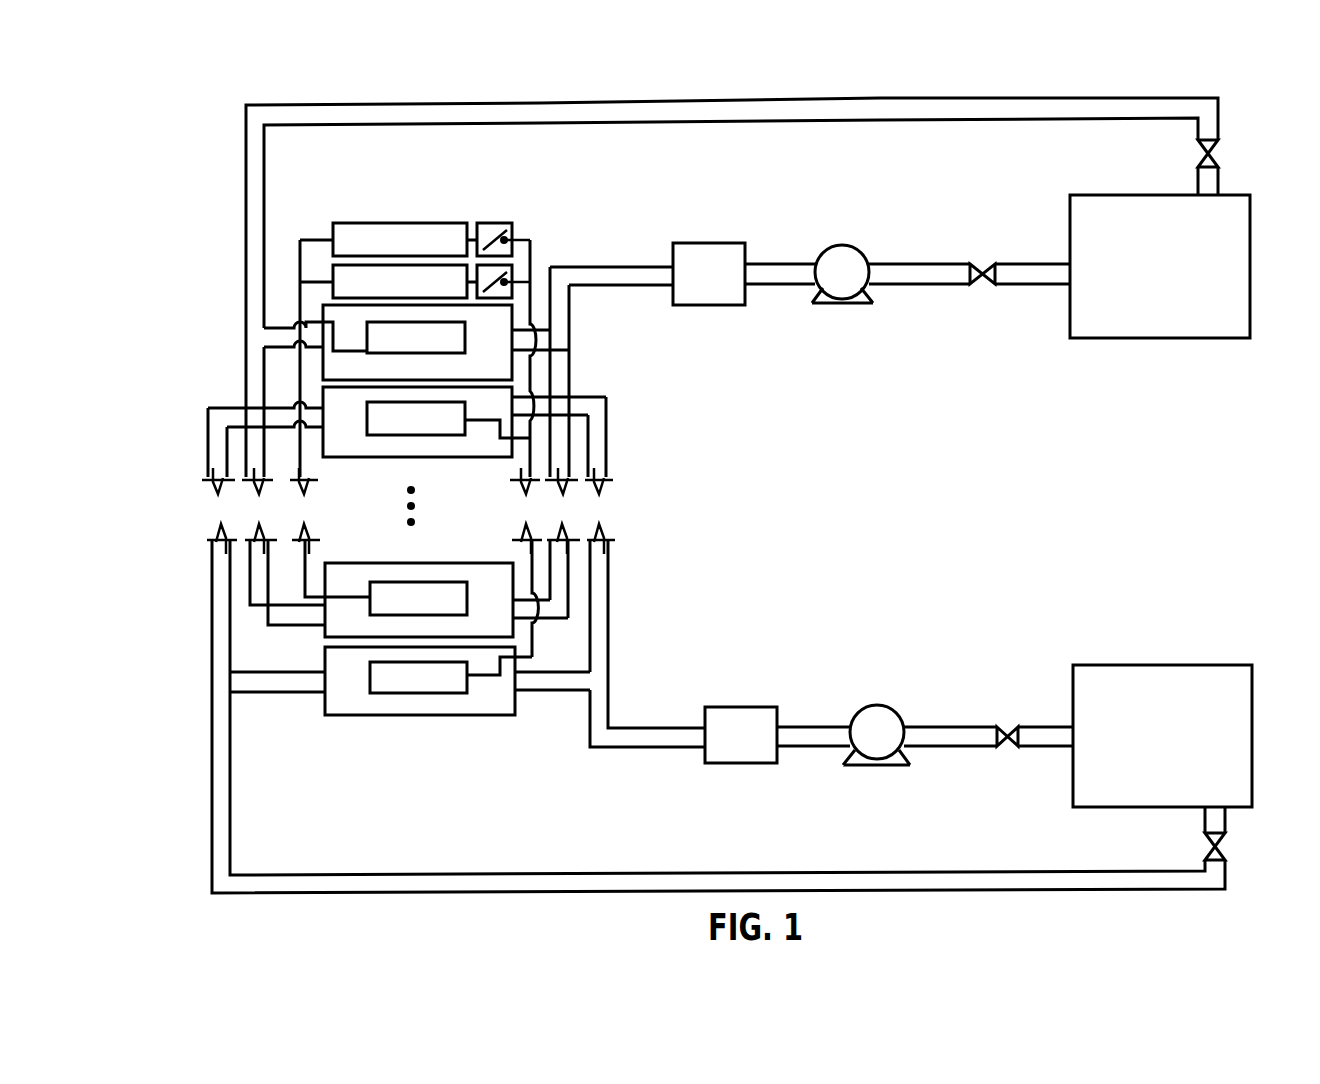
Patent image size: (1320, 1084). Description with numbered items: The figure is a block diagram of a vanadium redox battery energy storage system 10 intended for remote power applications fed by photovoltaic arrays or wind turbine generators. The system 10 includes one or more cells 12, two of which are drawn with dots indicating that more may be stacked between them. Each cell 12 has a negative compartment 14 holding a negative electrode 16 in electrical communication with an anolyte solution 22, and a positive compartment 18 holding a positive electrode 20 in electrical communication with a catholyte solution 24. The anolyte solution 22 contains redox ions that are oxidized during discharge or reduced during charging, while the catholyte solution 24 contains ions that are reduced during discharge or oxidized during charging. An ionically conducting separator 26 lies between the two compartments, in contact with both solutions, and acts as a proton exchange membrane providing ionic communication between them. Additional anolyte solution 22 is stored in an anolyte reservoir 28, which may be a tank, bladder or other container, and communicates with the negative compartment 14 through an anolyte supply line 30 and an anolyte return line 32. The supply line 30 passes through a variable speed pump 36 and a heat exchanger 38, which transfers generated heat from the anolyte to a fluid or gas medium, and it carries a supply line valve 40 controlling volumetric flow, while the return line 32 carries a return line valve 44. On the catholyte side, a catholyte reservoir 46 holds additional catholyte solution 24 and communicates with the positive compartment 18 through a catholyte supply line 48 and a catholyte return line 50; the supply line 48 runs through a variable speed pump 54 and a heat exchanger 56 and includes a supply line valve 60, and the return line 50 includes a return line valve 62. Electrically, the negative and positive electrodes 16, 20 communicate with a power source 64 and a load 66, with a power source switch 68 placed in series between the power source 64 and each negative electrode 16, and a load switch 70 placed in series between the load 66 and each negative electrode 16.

The vanadium redox battery energy storage system 10 is at (197, 132).
The cell 12 is at (464, 539).
The negative compartment 14 is at (474, 414).
The negative electrode 16 is at (403, 432).
The positive compartment 18 is at (479, 349).
The positive electrode 20 is at (403, 349).
The anolyte solution 22 is at (330, 424).
The catholyte solution 24 is at (330, 372).
The ionically conducting separator 26 is at (500, 383).
The anolyte reservoir 28 is at (1149, 749).
The anolyte supply line 30 is at (628, 737).
The anolyte return line 32 is at (213, 718).
The pump 36 is at (864, 744).
The heat exchanger 38 is at (728, 747).
The supply line valve 40 is at (1006, 742).
The return line valve 44 is at (1222, 843).
The catholyte reservoir 46 is at (1147, 280).
The catholyte supply line 48 is at (1031, 268).
The catholyte return line 50 is at (247, 303).
The pump 54 is at (829, 284).
The heat exchanger 56 is at (696, 285).
The supply line valve 60 is at (983, 283).
The return line valve 62 is at (1218, 150).
The power source 64 is at (387, 294).
The load 66 is at (387, 252).
The power source switch 68 is at (509, 277).
The load switch 70 is at (509, 235).